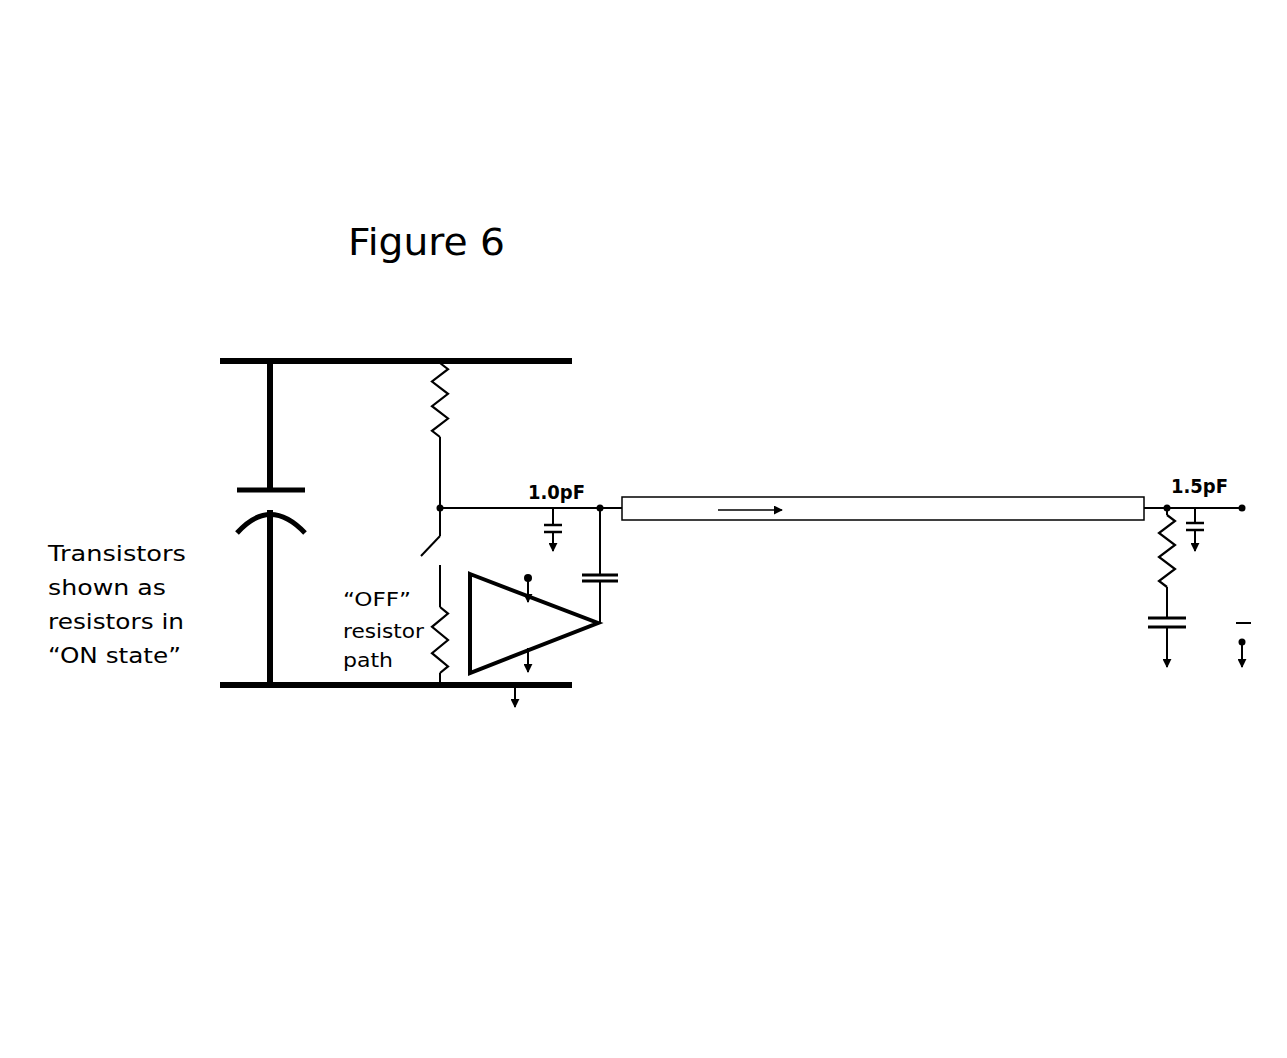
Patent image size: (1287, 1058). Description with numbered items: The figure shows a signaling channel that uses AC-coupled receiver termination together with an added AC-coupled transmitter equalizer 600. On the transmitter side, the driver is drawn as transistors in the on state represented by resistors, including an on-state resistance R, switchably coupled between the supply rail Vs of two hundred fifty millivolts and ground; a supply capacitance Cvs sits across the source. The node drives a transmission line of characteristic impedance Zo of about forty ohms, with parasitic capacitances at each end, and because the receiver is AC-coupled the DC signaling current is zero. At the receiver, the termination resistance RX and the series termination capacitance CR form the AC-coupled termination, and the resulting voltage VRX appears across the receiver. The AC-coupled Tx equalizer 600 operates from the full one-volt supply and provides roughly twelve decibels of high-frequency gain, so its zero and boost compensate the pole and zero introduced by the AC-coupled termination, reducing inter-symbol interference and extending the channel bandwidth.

The AC-coupled Tx equalizer 600 is at (563, 627).
The supply rail Vs is at (206, 365).
The source capacitor Cvs is at (284, 549).
The on-state transistor resistance R is at (500, 435).
The transmission line Zo is at (883, 515).
The Rx termination resistance RX is at (1072, 547).
The Rx termination capacitance CR is at (1088, 627).
The receiver voltage VRX is at (1244, 596).